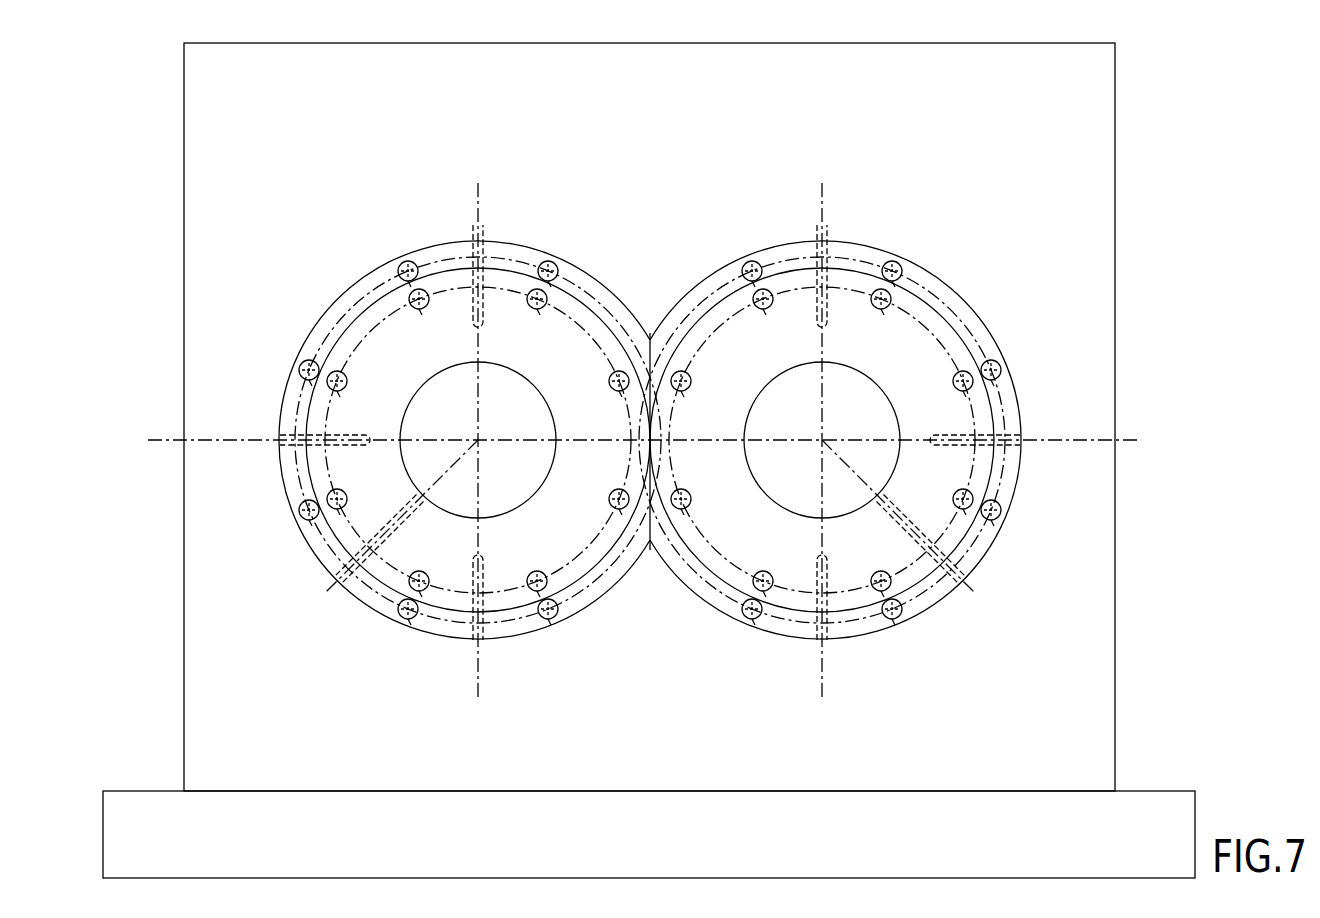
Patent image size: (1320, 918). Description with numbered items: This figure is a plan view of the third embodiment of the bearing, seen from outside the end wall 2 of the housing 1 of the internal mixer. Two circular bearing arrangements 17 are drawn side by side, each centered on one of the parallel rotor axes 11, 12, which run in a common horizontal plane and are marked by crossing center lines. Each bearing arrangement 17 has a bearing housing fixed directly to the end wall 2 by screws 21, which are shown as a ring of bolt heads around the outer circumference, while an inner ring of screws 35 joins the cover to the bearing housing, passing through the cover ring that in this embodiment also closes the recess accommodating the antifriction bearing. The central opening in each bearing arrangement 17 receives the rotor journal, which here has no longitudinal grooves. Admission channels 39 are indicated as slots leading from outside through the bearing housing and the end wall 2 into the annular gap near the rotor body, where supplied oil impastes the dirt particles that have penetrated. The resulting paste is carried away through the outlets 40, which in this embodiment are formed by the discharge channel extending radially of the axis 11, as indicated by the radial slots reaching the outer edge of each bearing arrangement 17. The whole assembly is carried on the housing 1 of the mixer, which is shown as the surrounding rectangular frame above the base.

The housing 1 is at (1122, 156).
The end wall 2 is at (1050, 116).
The axis 11 is at (478, 440).
The axis 12 is at (822, 440).
The bearing arrangement 17 is at (370, 262).
The screws 21 is at (746, 258).
The screws 35 is at (975, 378).
The admission channels 39 is at (481, 265).
The outlets 40 is at (336, 438).